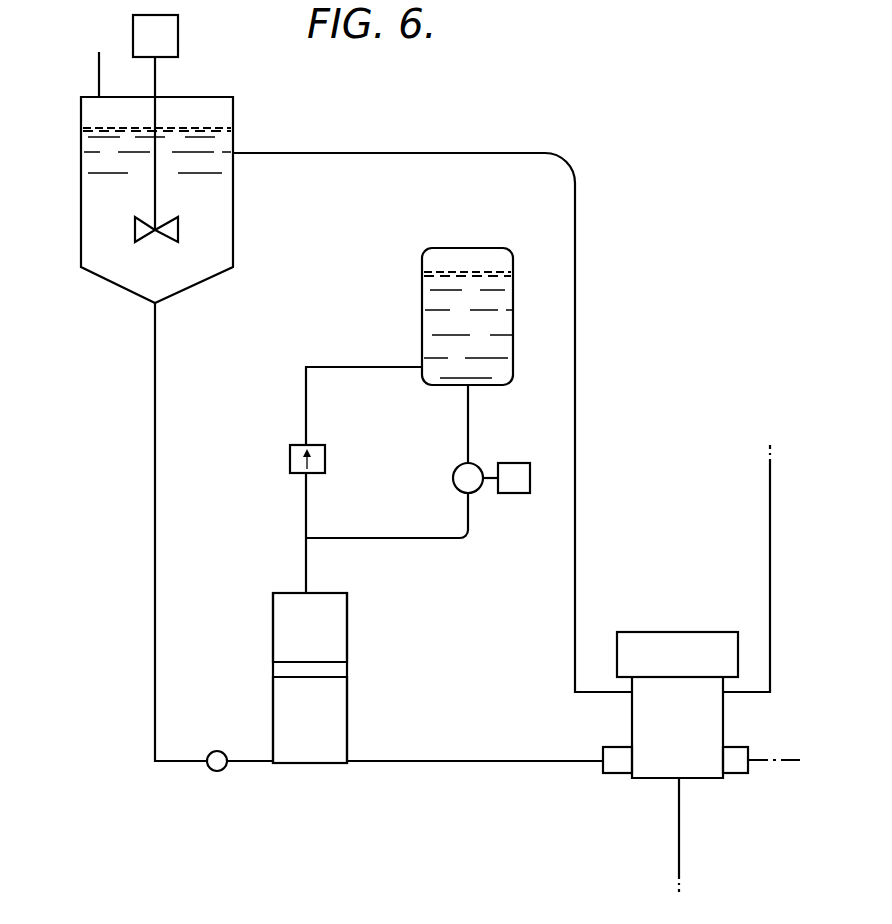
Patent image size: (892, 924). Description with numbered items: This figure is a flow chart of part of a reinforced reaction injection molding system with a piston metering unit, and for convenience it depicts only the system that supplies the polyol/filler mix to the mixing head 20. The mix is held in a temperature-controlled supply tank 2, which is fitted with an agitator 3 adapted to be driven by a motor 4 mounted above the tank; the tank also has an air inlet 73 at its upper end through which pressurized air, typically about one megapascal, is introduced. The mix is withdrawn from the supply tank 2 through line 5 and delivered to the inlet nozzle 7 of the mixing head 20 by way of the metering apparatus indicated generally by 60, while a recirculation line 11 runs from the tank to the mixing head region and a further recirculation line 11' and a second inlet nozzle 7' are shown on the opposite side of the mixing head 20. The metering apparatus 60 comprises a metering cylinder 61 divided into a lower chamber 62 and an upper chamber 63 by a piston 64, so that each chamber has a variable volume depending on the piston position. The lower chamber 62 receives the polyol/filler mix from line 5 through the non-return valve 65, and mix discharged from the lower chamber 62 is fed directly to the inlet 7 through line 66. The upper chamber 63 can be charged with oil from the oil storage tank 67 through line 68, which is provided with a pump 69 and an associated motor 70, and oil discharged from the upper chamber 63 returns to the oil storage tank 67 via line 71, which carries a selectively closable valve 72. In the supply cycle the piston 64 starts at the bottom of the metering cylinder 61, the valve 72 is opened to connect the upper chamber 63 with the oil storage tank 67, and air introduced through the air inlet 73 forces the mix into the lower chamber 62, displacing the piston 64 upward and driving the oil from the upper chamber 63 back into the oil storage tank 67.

The supply tank 2 is at (233, 193).
The agitator 3 is at (178, 230).
The motor 4 is at (178, 35).
The line 5 is at (155, 407).
The inlet nozzle 7 is at (603, 785).
The inlet nozzle 7' is at (761, 786).
The recirculation line 11 is at (432, 395).
The recirculation line 11' is at (740, 568).
The mixing head 20 is at (710, 637).
The metering apparatus 60 is at (440, 616).
The metering cylinder 61 is at (313, 657).
The lower chamber 62 is at (335, 710).
The upper chamber 63 is at (332, 620).
The piston 64 is at (335, 670).
The non-return valve 65 is at (225, 772).
The line 66 is at (462, 762).
The oil storage tank 67 is at (422, 298).
The line 68 is at (462, 540).
The pump 69 is at (457, 468).
The motor 70 is at (535, 447).
The line 71 is at (306, 383).
The valve 72 is at (290, 460).
The air inlet 73 is at (99, 70).